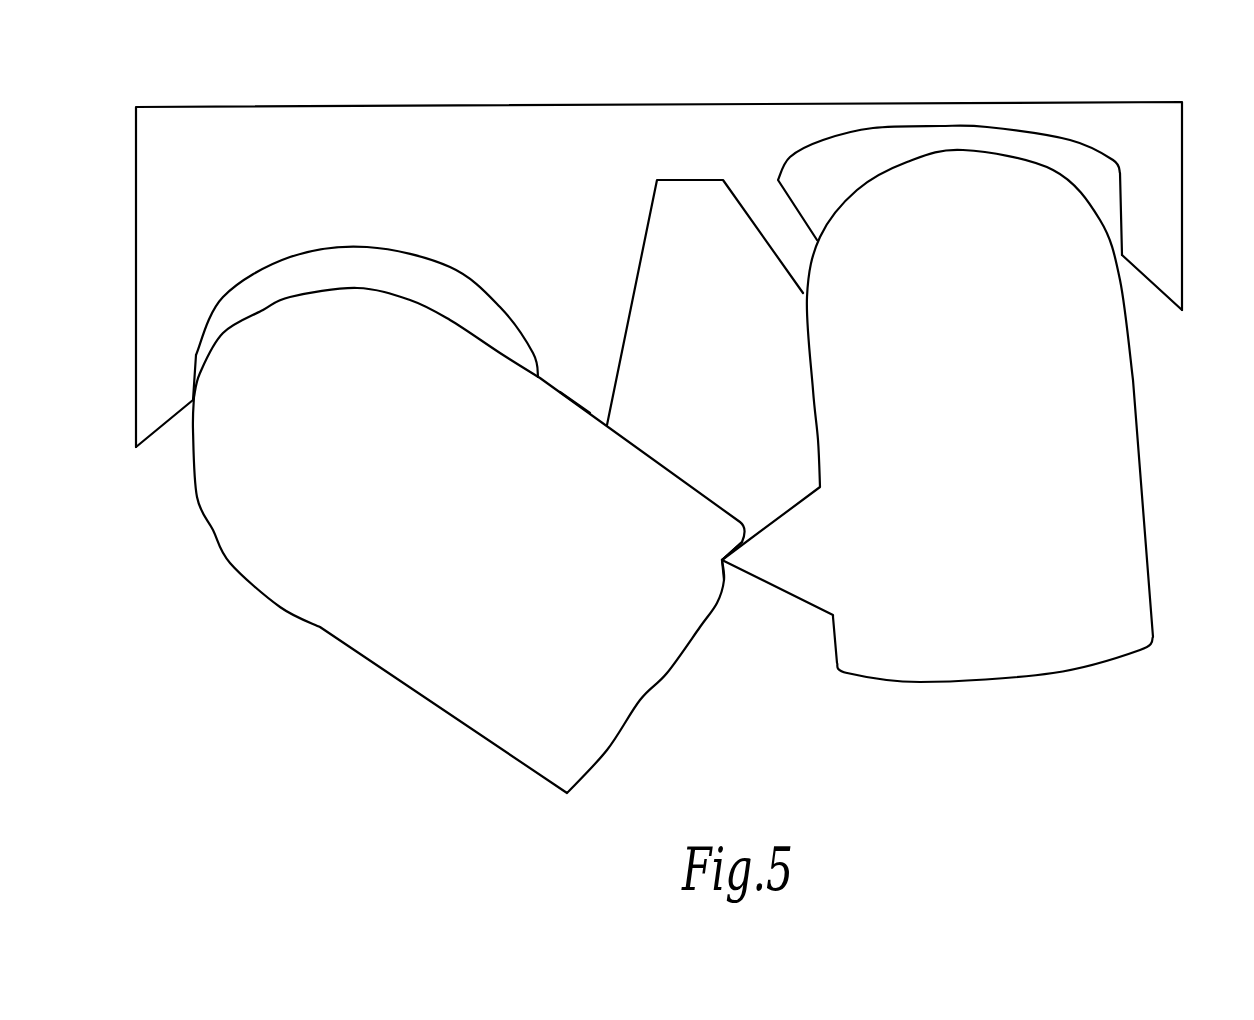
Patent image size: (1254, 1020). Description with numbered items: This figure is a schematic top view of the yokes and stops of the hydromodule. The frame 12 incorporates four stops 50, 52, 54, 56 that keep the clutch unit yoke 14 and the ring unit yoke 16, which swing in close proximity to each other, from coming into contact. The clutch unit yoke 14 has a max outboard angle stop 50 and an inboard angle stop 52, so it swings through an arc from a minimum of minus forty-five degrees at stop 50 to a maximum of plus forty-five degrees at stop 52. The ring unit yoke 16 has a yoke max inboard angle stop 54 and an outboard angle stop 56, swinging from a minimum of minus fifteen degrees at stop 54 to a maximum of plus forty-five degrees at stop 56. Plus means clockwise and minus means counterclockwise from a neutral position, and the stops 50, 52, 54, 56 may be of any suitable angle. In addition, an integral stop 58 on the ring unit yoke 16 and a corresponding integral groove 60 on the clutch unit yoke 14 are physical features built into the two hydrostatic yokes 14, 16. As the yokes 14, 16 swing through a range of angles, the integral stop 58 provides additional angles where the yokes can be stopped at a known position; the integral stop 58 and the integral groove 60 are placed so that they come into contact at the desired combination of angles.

The frame 12 is at (168, 107).
The clutch unit yoke 14 is at (325, 630).
The ring unit yoke 16 is at (1150, 557).
The max outboard angle stop 50 is at (153, 442).
The inboard angle stop 52 is at (575, 405).
The yoke max inboard angle stop 54 is at (803, 293).
The outboard angle stop 56 is at (1162, 290).
The integral stop 58 is at (797, 600).
The integral groove 60 is at (722, 565).